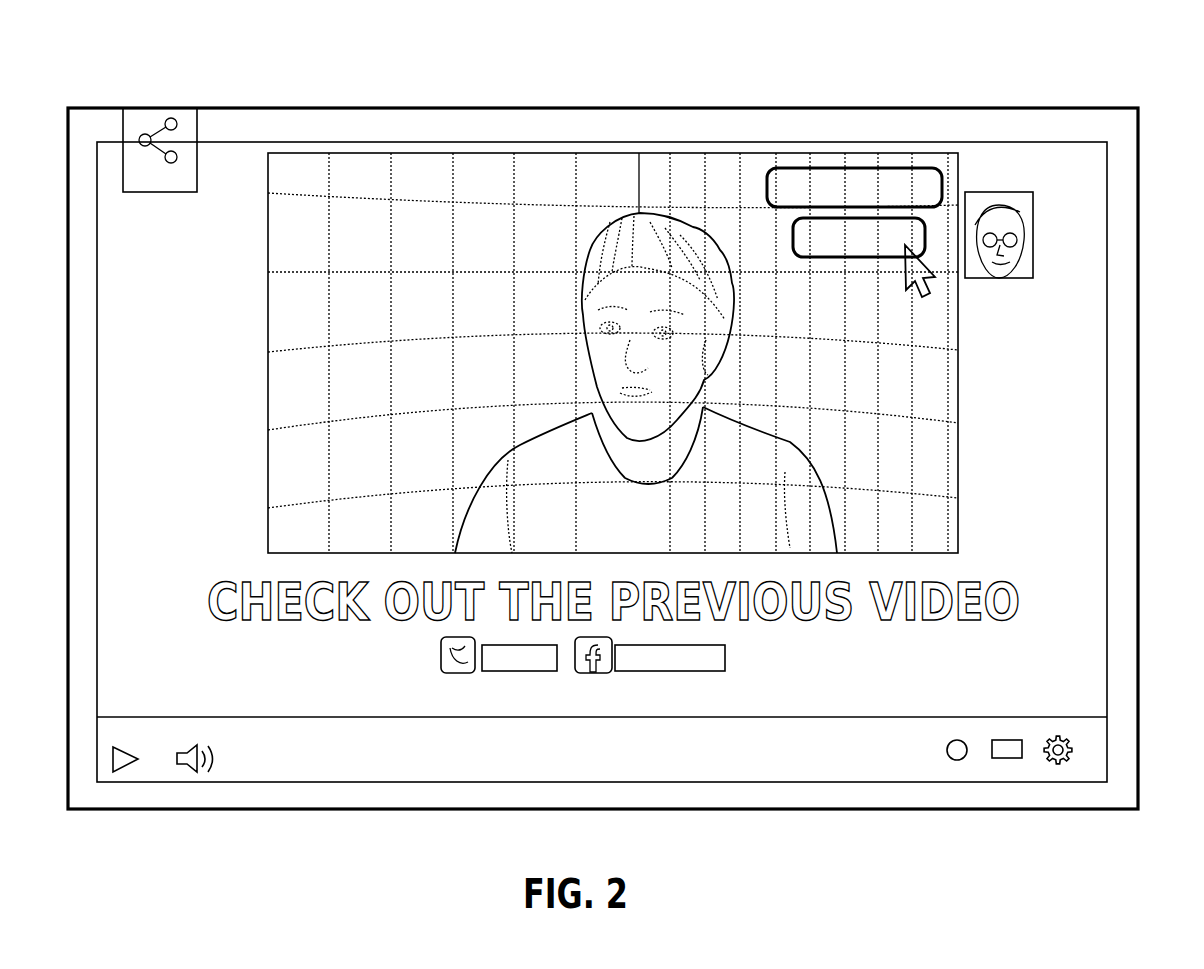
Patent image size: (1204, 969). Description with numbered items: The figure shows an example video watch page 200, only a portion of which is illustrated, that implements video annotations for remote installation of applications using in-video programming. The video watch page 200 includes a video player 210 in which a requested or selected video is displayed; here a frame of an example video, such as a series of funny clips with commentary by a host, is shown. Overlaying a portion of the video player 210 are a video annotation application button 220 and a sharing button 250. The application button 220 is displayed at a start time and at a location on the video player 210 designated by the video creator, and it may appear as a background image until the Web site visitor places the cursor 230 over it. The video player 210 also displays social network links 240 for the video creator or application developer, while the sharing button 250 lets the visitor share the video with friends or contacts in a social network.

The video watch page 200 is at (725, 810).
The video player 210 is at (1087, 382).
The video annotation application button 220 is at (855, 168).
The cursor 230 is at (930, 268).
The social network links 240 is at (583, 648).
The sharing button 250 is at (182, 162).